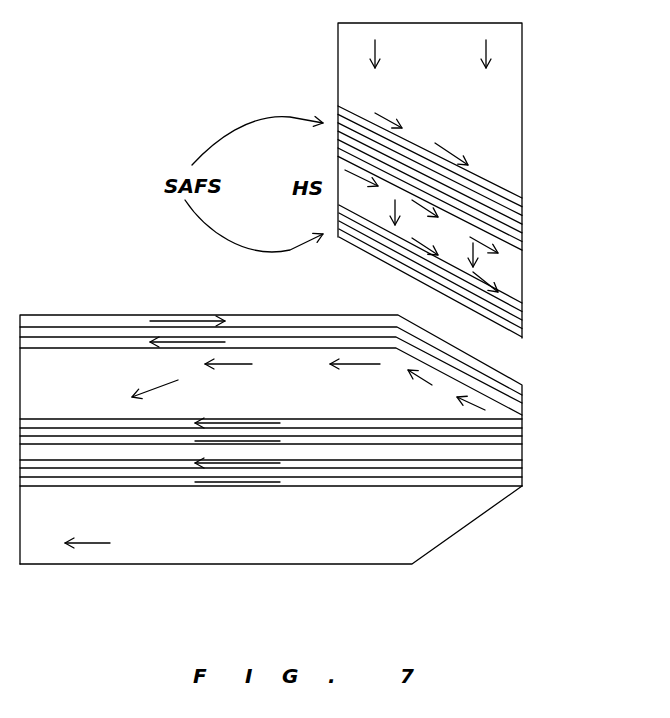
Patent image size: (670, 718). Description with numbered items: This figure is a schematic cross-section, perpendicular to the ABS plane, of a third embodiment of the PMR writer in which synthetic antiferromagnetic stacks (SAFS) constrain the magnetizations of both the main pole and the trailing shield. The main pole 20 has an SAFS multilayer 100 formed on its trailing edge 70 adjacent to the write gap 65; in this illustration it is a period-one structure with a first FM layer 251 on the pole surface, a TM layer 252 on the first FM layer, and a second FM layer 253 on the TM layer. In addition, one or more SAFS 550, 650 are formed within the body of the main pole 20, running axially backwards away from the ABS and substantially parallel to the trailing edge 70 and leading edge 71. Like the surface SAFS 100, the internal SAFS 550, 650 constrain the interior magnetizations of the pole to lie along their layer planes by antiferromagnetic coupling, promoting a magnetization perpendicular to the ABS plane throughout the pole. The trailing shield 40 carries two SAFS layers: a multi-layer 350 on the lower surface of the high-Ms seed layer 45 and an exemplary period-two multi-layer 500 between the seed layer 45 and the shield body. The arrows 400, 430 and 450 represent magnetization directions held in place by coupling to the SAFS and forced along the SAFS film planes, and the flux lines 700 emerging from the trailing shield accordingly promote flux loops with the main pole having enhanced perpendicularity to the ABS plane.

The SAFS multilayer 100 is at (60, 314).
The second FM layer 253 is at (247, 322).
The TM layer 252 is at (306, 334).
The first FM layer 251 is at (370, 345).
The trailing edge 70 is at (286, 349).
The SAFS 550 is at (526, 420).
The SAFS 650 is at (526, 458).
The main pole 20 is at (418, 541).
The leading edge 71 is at (120, 564).
The trailing shield 40 is at (507, 54).
The magnetization direction arrow 400 is at (447, 142).
The magnetization direction arrow 430 is at (338, 172).
The multi-layer 500 is at (526, 210).
The seed layer 45 is at (507, 270).
The magnetization direction arrow 450 is at (338, 206).
The multi-layer 350 is at (524, 312).
The write gap 65 is at (490, 350).
The flux lines 700 is at (641, 366).